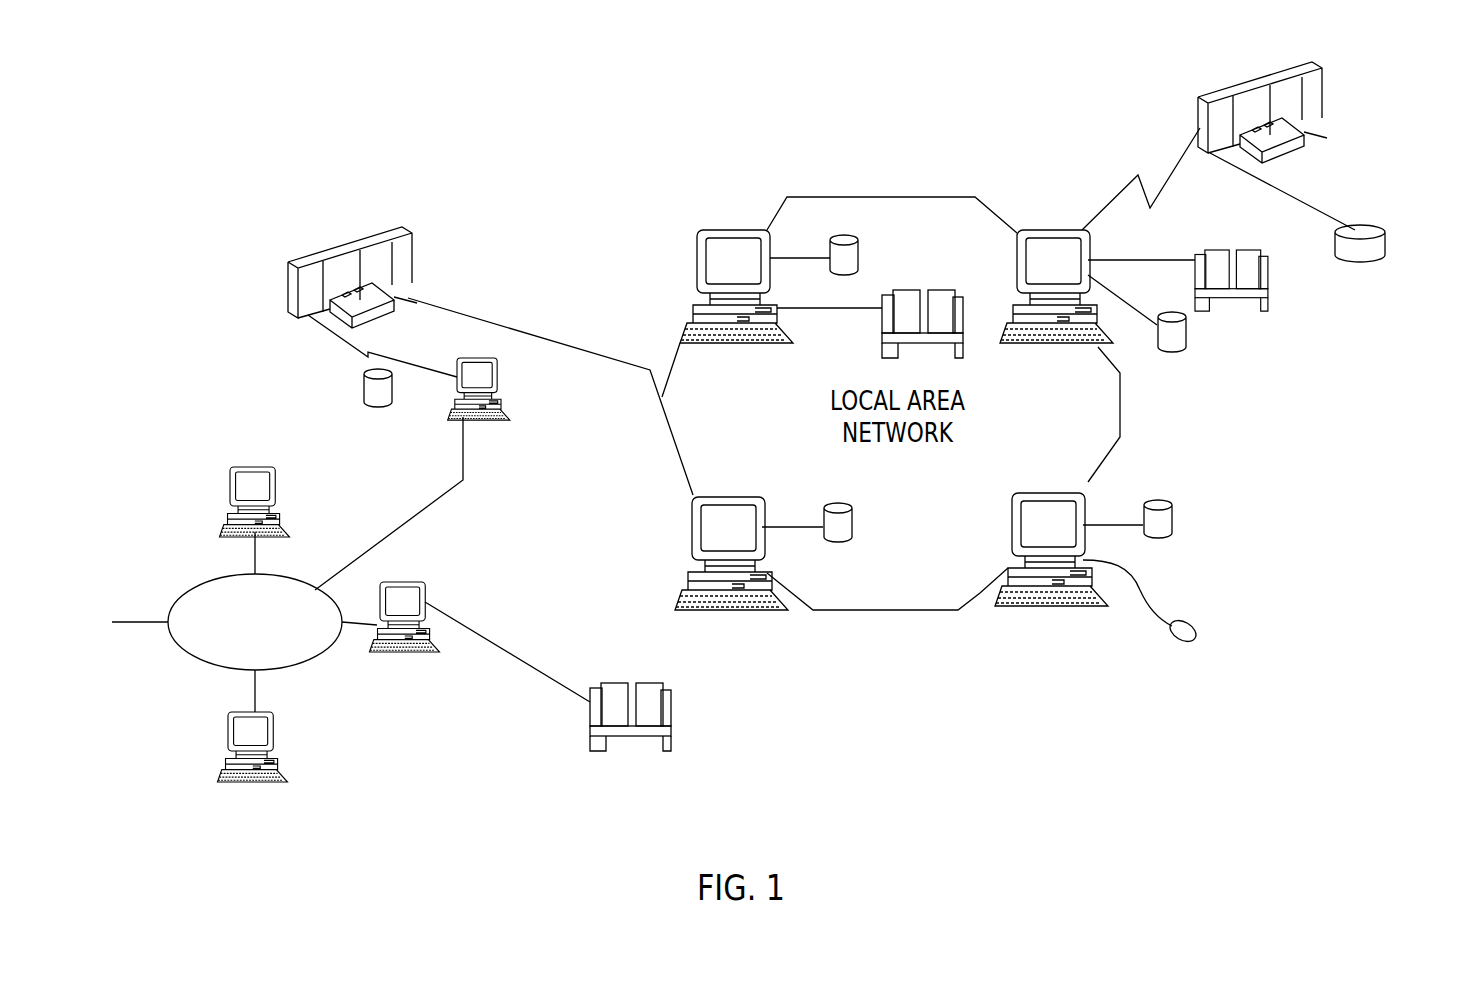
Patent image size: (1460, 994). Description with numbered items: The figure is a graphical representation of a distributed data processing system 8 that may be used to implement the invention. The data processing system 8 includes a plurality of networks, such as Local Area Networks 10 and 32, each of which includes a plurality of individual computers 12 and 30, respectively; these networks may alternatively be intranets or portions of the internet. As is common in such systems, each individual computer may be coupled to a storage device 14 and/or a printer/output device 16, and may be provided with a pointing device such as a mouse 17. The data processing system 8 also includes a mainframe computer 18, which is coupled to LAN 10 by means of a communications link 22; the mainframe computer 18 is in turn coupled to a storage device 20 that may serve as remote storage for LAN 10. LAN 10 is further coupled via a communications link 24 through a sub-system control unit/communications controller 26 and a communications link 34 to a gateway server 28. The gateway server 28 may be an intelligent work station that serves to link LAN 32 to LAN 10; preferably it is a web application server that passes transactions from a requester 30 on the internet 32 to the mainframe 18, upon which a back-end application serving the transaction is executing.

The data processing system 8 is at (848, 197).
The Local Area Network 10 is at (863, 610).
The individual computers 12 is at (1048, 475).
The storage device 14 is at (362, 392).
The printer/output device 16 is at (637, 660).
The mouse 17 is at (1195, 624).
The mainframe computer 18 is at (1272, 80).
The storage device 20 is at (1388, 243).
The communications link 22 is at (1185, 153).
The communications link 24 is at (540, 335).
The sub-system control unit/communications controller 26 is at (407, 232).
The gateway server 28 is at (473, 357).
The individual computers 30 is at (232, 797).
The Local Area Network 32 is at (202, 665).
The communications link 34 is at (338, 342).